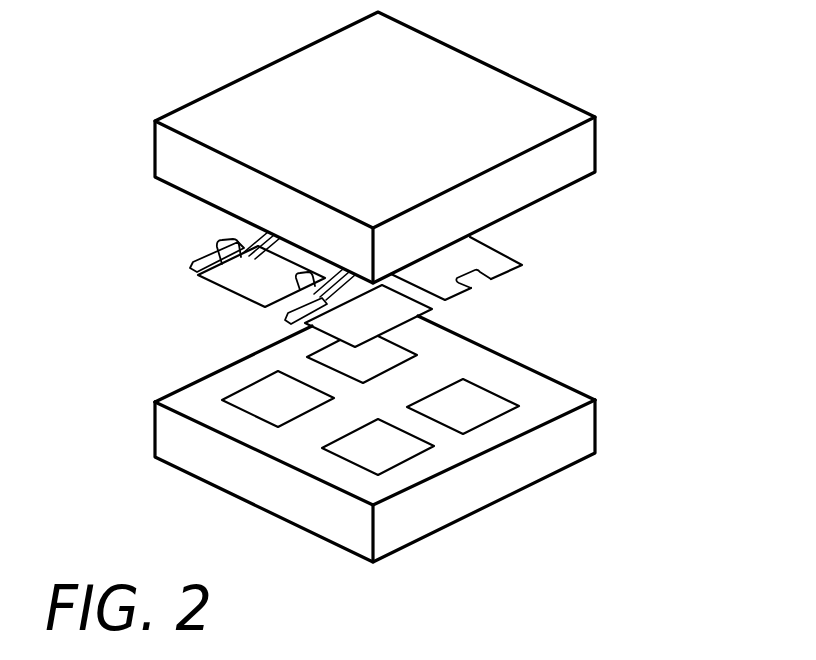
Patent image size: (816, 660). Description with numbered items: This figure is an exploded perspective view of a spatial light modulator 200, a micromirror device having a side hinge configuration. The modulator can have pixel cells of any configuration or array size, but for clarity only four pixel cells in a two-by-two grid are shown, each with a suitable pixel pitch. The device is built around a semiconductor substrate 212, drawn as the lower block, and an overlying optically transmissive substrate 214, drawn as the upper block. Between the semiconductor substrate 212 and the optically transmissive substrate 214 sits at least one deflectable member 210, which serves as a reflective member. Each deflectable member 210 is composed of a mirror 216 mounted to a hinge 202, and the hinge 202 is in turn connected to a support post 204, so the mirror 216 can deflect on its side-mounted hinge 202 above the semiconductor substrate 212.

The spatial light modulator 200 is at (207, 79).
The hinge 202 is at (217, 236).
The support post 204 is at (193, 262).
The deflectable member 210 is at (282, 260).
The semiconductor substrate 212 is at (503, 483).
The optically transmissive substrate 214 is at (597, 145).
The mirror 216 is at (323, 315).